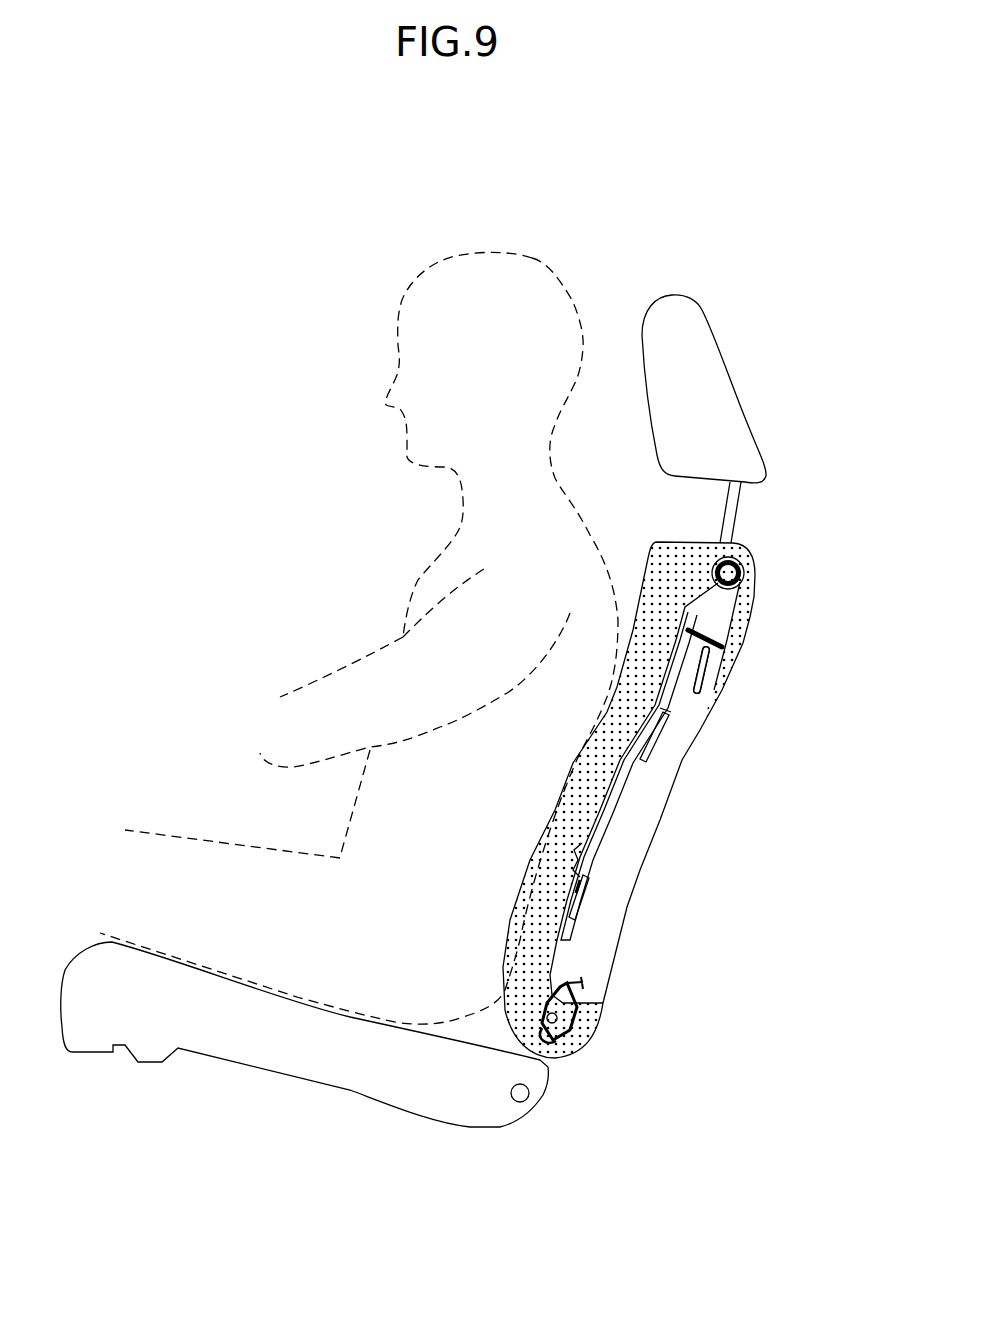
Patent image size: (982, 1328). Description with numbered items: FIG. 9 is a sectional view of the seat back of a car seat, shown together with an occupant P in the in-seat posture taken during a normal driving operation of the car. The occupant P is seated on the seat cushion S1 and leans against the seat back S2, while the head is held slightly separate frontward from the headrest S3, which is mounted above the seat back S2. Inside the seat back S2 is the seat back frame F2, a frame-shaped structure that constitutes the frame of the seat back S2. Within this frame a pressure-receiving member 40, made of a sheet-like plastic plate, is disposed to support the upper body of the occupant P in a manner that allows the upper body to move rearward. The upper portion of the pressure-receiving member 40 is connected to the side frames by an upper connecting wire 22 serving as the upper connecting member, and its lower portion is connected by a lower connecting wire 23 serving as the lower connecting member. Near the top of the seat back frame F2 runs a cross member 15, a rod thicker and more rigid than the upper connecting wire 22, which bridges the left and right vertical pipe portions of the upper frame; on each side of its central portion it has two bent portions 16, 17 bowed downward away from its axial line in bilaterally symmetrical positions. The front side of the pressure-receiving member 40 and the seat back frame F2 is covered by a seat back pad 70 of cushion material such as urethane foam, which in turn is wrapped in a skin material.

The seat cushion S1 is at (273, 1067).
The seat back S2 is at (752, 553).
The headrest S3 is at (713, 337).
The occupant P is at (532, 258).
The cross member 15 is at (712, 627).
The bent portion 16 is at (715, 670).
The bent portion 17 is at (701, 670).
The upper connecting wire 22 is at (662, 737).
The lower connecting wire 23 is at (578, 903).
The pressure-receiving member 40 is at (620, 793).
The seat back pad 70 is at (560, 830).
The seat back frame F2 is at (698, 706).